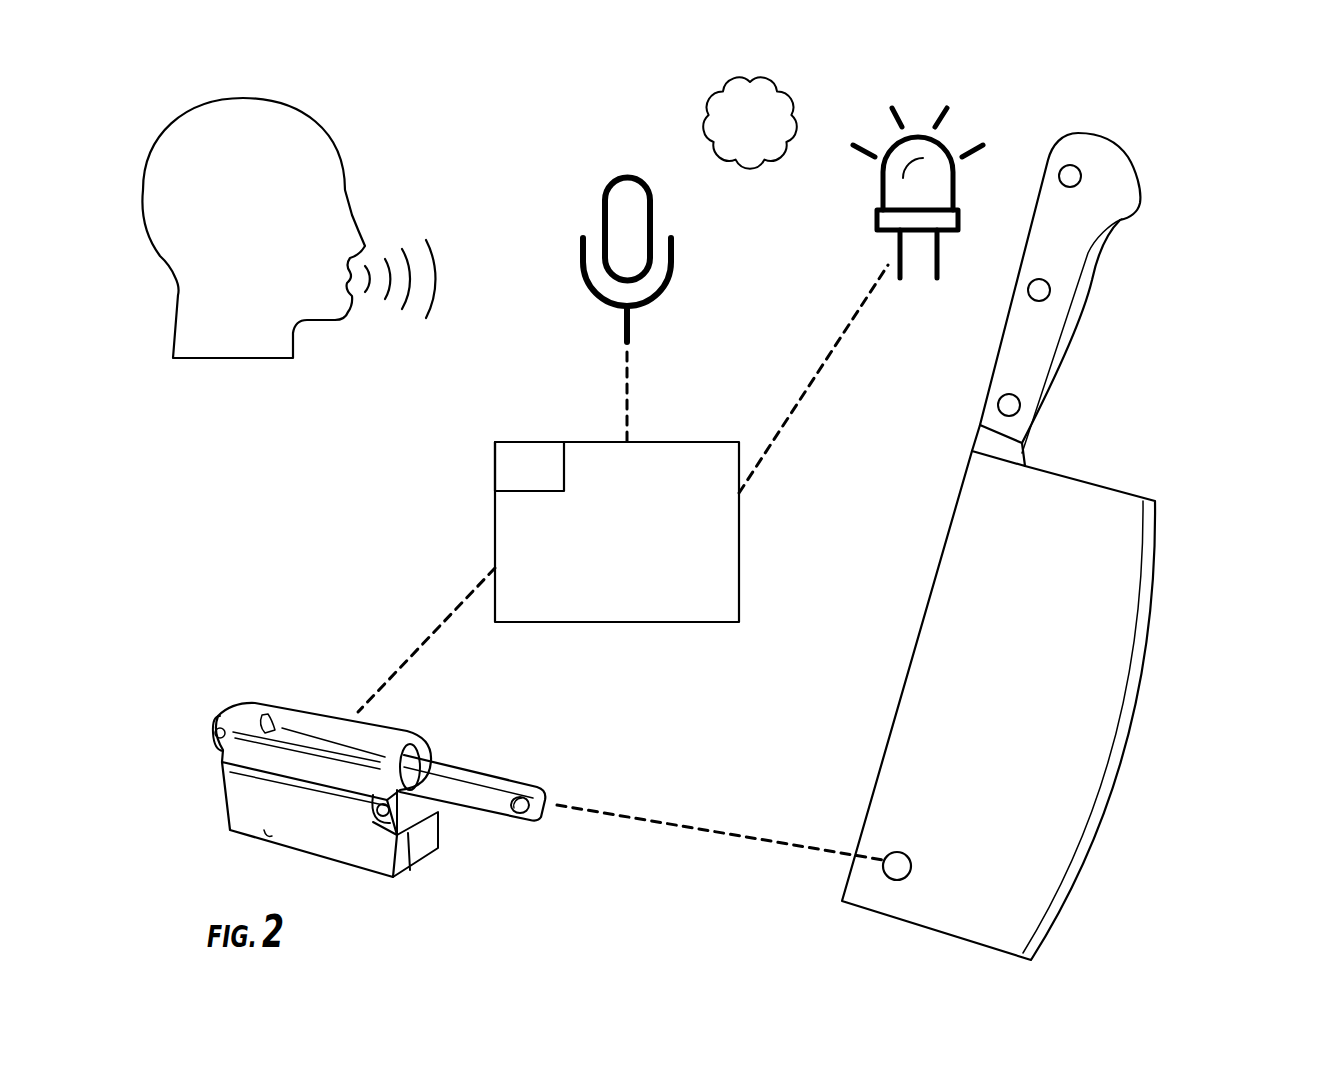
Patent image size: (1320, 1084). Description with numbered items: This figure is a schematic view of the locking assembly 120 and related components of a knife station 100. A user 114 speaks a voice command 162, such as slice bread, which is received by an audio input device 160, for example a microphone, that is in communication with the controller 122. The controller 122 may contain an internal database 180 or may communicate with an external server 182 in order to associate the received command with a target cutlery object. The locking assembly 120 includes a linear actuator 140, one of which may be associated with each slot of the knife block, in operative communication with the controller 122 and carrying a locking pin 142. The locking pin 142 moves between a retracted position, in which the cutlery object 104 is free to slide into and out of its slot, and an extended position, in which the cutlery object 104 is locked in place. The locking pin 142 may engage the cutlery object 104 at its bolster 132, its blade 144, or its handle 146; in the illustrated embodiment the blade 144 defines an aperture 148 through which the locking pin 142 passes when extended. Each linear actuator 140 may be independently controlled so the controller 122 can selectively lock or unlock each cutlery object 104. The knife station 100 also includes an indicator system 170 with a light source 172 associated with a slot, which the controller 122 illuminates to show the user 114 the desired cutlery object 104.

The knife station 100 is at (1243, 165).
The cutlery object 104 is at (1002, 546).
The user 114 is at (160, 263).
The locking assembly 120 is at (383, 794).
The controller 122 is at (617, 532).
The bolster 132 is at (1112, 483).
The linear actuator 140 is at (305, 735).
The locking pin 142 is at (477, 783).
The blade 144 is at (1024, 745).
The handle 146 is at (1048, 342).
The aperture 148 is at (890, 877).
The audio input device 160 is at (648, 177).
The voice command 162 is at (430, 253).
The indicator system 170 is at (945, 159).
The light source 172 is at (955, 182).
The internal database 180 is at (544, 478).
The external server 182 is at (708, 438).